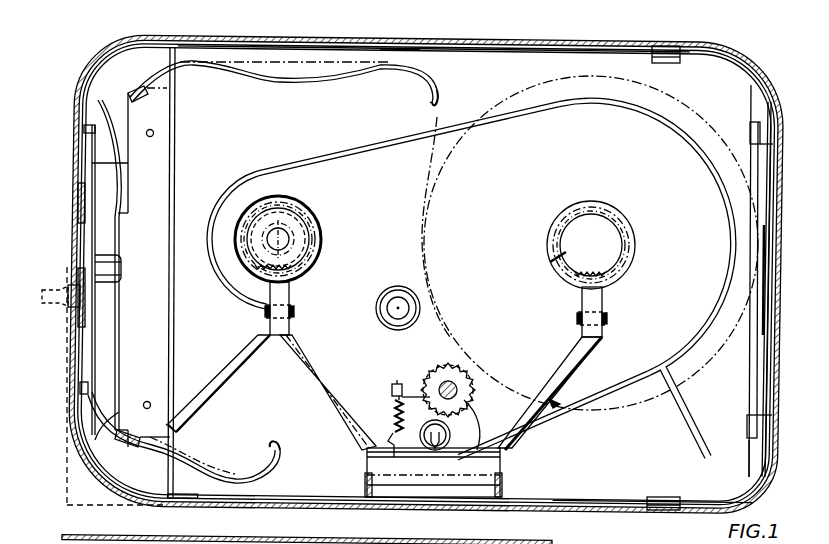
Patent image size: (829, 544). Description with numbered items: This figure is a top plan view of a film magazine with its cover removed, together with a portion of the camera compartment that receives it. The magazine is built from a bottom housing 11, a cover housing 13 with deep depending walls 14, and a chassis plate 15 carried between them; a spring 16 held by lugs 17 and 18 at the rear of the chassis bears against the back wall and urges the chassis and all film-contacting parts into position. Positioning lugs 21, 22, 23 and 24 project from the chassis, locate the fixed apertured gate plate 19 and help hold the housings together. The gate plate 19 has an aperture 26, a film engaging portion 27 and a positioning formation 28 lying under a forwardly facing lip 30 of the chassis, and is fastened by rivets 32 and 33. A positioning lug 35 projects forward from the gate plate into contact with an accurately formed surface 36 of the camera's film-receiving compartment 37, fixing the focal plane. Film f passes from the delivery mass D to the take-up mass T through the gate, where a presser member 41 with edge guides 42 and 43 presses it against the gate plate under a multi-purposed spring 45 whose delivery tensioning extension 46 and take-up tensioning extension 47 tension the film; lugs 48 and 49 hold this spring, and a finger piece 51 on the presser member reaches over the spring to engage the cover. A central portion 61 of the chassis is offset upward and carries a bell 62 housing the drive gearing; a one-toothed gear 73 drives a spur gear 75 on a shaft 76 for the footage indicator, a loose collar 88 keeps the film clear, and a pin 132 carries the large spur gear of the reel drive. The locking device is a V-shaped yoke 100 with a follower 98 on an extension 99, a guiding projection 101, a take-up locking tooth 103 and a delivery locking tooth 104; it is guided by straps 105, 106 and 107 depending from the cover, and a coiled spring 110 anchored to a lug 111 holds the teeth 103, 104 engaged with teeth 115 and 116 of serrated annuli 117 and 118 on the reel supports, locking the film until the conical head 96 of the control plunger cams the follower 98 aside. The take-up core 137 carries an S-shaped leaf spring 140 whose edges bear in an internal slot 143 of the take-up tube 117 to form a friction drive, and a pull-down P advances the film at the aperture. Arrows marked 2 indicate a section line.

The bottom housing 11 is at (755, 455).
The cover housing 13 is at (642, 542).
The depending walls 14 is at (772, 362).
The chassis plate 15 is at (729, 380).
The spring 16 is at (773, 183).
The lug 17 is at (760, 428).
The lug 18 is at (758, 133).
The fixed apertured plate 19 is at (400, 43).
The positioning lug 21 is at (668, 53).
The positioning lug 22 is at (195, 498).
The positioning lug 23 is at (200, 44).
The positioning lug 24 is at (672, 508).
The aperture 26 is at (91, 258).
The film engaging portion 27 is at (80, 212).
The positioning formation 28 is at (140, 440).
The forwardly facing lip 30 is at (136, 272).
The rivet 32 is at (155, 134).
The rivet 33 is at (151, 402).
The positioning lug 35 is at (70, 304).
The accurately formed surface 36 is at (66, 352).
The film-receiving compartment 37 is at (85, 478).
The presser member 41 is at (128, 163).
The edge guide 42 is at (91, 142).
The edge guide 43 is at (82, 391).
The multi-purposed spring 45 is at (185, 82).
The delivery tensioning extension 46 is at (435, 88).
The take-up tensioning extension 47 is at (284, 457).
The lug 48 is at (119, 228).
The lug 49 is at (119, 316).
The combined finger piece and positioning member 51 is at (112, 268).
The central portion 61 is at (426, 274).
The bell 62 is at (477, 413).
The one-toothed gear 73 is at (450, 448).
The spur gear 75 is at (462, 368).
The shaft 76 is at (449, 385).
The loose protective collar 88 is at (440, 380).
The conical head 96 is at (553, 407).
The follower 98 is at (367, 448).
The extension 99 is at (450, 457).
The V-shaped control member 100 is at (566, 404).
The guiding projection 101 is at (100, 536).
The take-up locking tooth 103 is at (288, 283).
The delivery locking tooth 104 is at (600, 286).
The strap 105 is at (294, 313).
The strap 106 is at (607, 320).
The strap 107 is at (367, 485).
The coiled spring 110 is at (392, 410).
The lug 111 is at (393, 382).
The teeth 115 is at (306, 251).
The teeth 116 is at (622, 258).
The serrated annulus 117 is at (312, 237).
The serrated annulus 118 is at (591, 245).
The pin 132 is at (402, 305).
The take-up core 137 is at (308, 205).
The S-shaped leaf spring 140 is at (262, 215).
The internal slot 143 is at (325, 228).
The pull-down P is at (44, 295).
The take-up mass T is at (325, 215).
The delivery mass D is at (633, 214).
The film f is at (100, 436).
The section line 2 is at (440, 12).